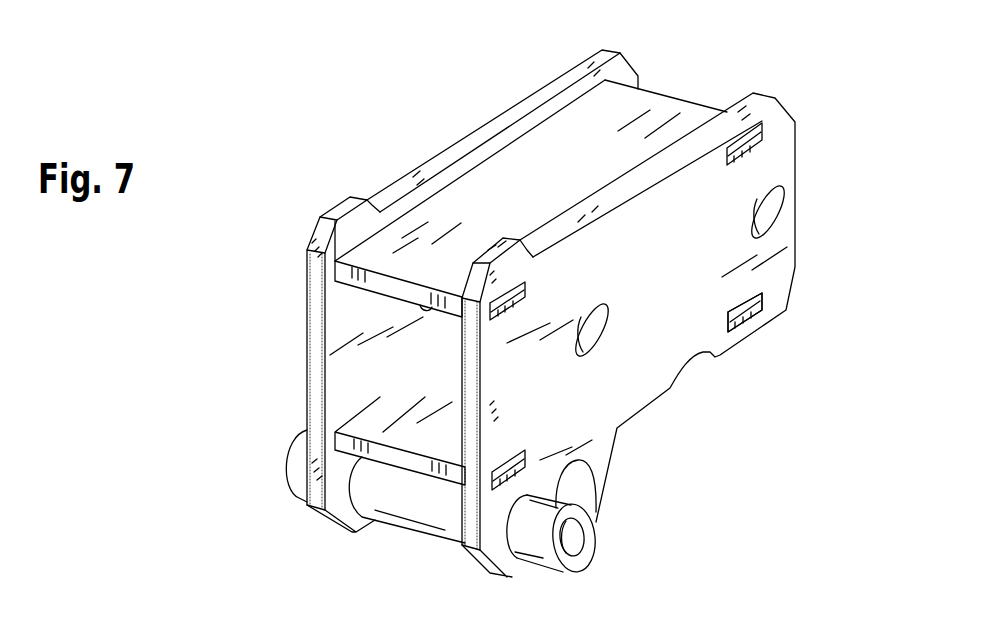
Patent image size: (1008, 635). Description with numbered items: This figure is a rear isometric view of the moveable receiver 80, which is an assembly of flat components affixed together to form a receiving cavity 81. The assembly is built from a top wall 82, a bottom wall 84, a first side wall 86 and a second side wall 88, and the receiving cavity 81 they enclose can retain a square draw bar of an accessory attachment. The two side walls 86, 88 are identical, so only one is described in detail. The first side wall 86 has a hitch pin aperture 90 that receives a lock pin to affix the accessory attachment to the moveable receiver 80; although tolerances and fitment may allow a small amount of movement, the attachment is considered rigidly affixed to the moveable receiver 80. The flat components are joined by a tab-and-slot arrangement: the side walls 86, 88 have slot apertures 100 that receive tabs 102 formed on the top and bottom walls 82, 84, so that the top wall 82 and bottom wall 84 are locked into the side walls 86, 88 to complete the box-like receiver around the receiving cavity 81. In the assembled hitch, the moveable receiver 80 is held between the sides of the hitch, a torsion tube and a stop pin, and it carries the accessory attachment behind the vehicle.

The moveable receiver 80 is at (323, 100).
The receiving cavity 81 is at (347, 368).
The top wall 82 is at (508, 170).
The bottom wall 84 is at (383, 412).
The first side wall 86 is at (538, 388).
The second side wall 88 is at (347, 304).
The hitch pin aperture 90 is at (608, 328).
The slot apertures 100 is at (763, 130).
The tabs 102 is at (758, 304).